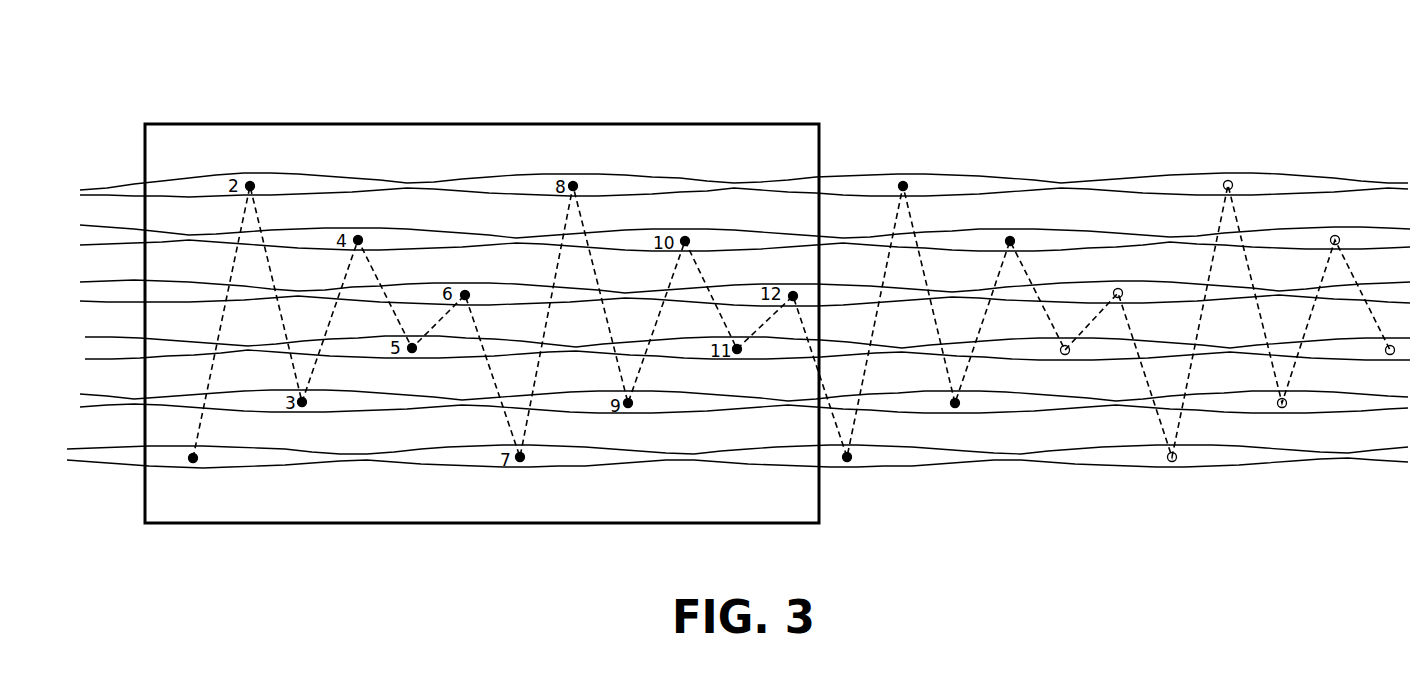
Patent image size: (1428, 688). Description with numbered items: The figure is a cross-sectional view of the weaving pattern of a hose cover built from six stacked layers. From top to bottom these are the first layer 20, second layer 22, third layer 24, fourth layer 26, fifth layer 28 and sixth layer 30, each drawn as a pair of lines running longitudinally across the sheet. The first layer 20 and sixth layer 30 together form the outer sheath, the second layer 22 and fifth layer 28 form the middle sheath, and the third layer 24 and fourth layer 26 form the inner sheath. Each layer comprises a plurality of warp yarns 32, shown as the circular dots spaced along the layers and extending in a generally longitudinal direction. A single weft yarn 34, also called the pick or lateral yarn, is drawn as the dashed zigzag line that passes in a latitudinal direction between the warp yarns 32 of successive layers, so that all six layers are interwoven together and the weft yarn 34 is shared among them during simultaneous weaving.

The first layer 20 is at (75, 453).
The second layer 22 is at (98, 401).
The third layer 24 is at (108, 349).
The fourth layer 26 is at (100, 291).
The fifth layer 28 is at (95, 236).
The sixth layer 30 is at (105, 189).
The warp yarns 32 is at (250, 449).
The weft yarn 34 is at (237, 261).